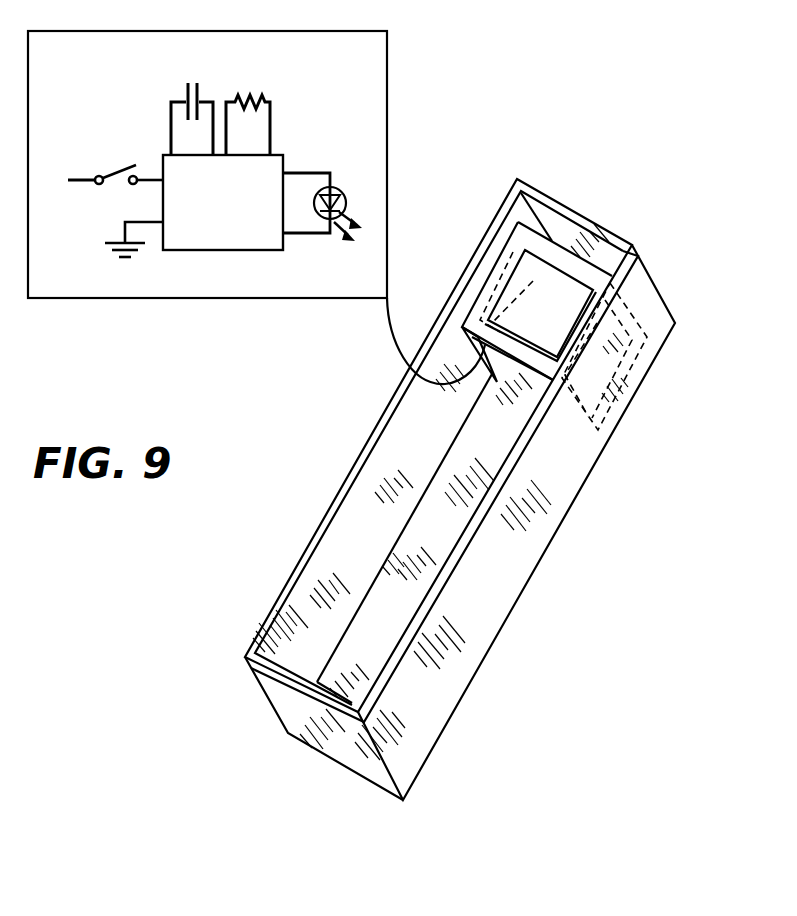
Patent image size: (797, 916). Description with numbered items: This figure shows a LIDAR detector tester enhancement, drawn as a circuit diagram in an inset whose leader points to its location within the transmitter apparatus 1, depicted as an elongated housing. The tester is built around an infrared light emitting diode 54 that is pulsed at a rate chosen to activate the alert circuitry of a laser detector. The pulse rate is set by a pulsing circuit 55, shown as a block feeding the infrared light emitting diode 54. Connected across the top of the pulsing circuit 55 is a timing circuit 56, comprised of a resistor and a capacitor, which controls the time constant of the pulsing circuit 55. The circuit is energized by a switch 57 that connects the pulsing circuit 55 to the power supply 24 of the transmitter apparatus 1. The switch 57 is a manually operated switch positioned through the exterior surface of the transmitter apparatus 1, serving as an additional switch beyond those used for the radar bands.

The transmitter apparatus 1 is at (262, 608).
The power supply 24 is at (66, 188).
The infrared light emitting diode 54 is at (335, 186).
The pulsing circuit 55 is at (223, 220).
The timing circuit 56 is at (272, 80).
The switch 57 is at (128, 170).